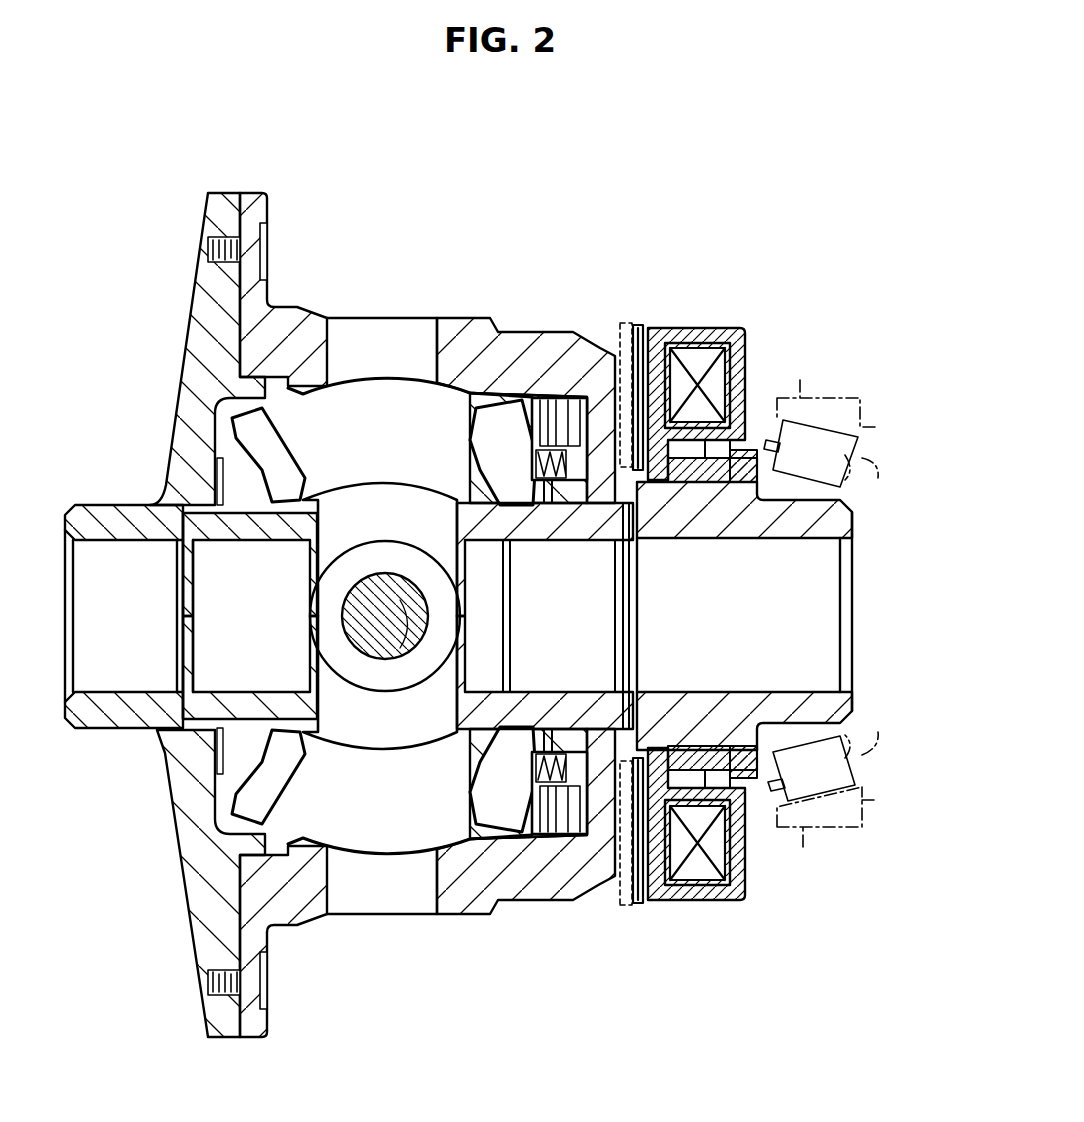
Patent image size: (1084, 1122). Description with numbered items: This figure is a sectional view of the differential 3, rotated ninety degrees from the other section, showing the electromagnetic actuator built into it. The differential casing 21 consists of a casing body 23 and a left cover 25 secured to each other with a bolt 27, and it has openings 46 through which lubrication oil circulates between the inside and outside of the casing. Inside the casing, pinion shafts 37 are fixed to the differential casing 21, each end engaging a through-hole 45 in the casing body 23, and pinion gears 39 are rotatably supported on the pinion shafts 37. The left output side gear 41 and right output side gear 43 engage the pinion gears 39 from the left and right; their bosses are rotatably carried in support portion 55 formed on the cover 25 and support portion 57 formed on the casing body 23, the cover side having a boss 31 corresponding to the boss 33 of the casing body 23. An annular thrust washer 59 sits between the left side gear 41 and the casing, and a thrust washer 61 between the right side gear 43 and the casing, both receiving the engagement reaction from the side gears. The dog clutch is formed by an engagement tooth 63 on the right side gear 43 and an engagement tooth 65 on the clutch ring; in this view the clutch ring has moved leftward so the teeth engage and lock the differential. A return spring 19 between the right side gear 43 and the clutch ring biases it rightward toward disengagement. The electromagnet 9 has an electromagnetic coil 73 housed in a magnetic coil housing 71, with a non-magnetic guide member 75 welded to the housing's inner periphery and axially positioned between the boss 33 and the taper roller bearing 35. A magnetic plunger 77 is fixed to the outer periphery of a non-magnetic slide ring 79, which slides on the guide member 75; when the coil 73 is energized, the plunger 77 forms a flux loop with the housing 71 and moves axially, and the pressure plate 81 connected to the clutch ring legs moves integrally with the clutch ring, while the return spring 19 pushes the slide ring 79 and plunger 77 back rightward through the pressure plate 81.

The differential 3 is at (193, 188).
The differential-lock electromagnet 9 is at (728, 543).
The return spring 19 is at (572, 455).
The differential casing 21 is at (240, 192).
The casing body 23 is at (330, 314).
The left cover 25 is at (178, 338).
The bolt 27 is at (262, 252).
The left boss 31 is at (127, 517).
The boss 33 is at (862, 520).
The taper roller bearing 35 is at (847, 450).
The pinion shaft 37 is at (362, 636).
The pinion gear 39 is at (368, 495).
The left output side gear 41 is at (282, 463).
The right output side gear 43 is at (483, 470).
The through-hole 45 is at (400, 645).
The opening 46 is at (355, 345).
The support portion 55 is at (210, 517).
The support portion 57 is at (597, 518).
The annular thrust washer 59 is at (245, 545).
The thrust washer 61 is at (534, 520).
The engagement tooth 63 is at (548, 425).
The engagement tooth 65 is at (560, 448).
The magnetic coil housing 71 is at (690, 326).
The electromagnetic coil 73 is at (718, 365).
The non-magnetic guide member 75 is at (655, 485).
The magnetic plunger 77 is at (725, 484).
The non-magnetic slide ring 79 is at (690, 485).
The pressure plate 81 is at (626, 322).